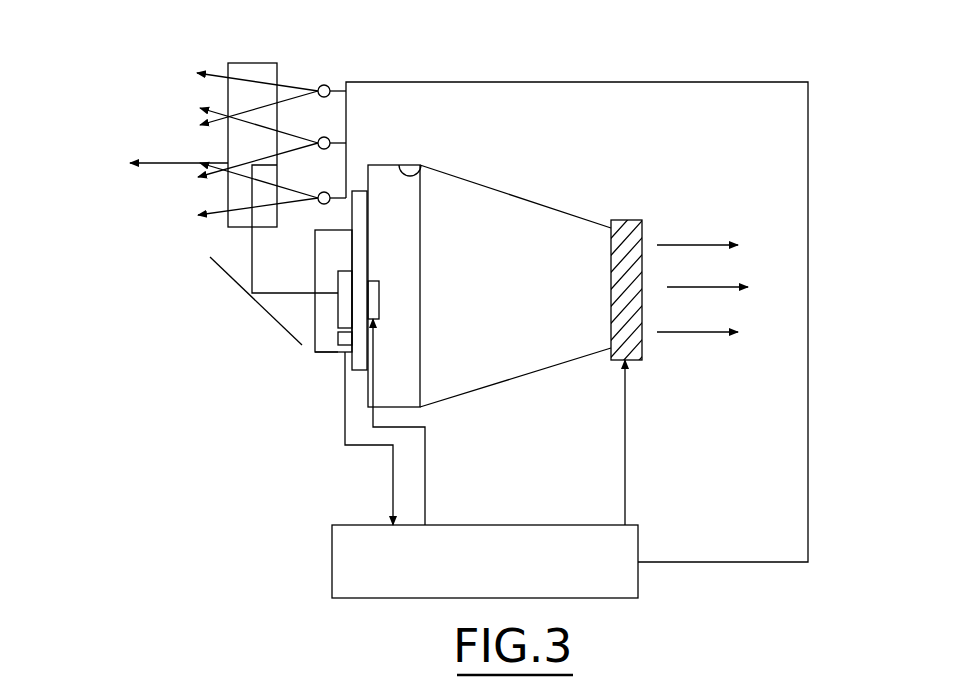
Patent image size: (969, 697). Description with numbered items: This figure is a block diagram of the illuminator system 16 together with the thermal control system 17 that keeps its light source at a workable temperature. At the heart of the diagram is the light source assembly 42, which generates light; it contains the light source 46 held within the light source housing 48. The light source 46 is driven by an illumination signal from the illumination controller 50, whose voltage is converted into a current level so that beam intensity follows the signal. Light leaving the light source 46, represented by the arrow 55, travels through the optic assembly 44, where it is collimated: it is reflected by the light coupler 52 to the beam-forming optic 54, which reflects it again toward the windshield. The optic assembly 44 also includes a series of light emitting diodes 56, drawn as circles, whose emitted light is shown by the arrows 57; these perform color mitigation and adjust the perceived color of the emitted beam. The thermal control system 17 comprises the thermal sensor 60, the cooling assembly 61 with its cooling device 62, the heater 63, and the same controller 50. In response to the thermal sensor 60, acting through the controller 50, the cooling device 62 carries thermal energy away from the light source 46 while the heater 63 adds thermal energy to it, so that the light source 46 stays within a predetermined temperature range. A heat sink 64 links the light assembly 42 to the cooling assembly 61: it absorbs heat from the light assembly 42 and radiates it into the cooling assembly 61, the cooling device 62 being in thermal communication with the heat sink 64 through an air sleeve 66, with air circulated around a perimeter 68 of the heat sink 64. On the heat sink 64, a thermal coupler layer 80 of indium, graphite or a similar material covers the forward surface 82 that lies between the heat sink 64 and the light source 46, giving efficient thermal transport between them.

The illuminator system 16 is at (867, 117).
The thermal control system 17 is at (245, 565).
The light source assembly 42 is at (315, 353).
The optic assembly 44 is at (180, 243).
The light source 46 is at (338, 278).
The light source housing 48 is at (315, 243).
The illumination controller 50 is at (533, 523).
The light coupler 52 is at (218, 269).
The beam-forming optic 54 is at (250, 63).
The arrow representing light from light source 55 is at (274, 292).
The light emitting diodes 56 is at (328, 193).
The arrows representing LED light 57 is at (213, 75).
The thermal sensor 60 is at (338, 352).
The cooling assembly 61 is at (532, 202).
The cooling device 62 is at (643, 220).
The heater 63 is at (379, 285).
The heat sink 64 is at (410, 407).
The air sleeve 66 is at (548, 357).
The perimeter of heat sink 68 is at (423, 172).
The thermal coupler layer 80 is at (345, 373).
The forward surface 82 is at (347, 362).